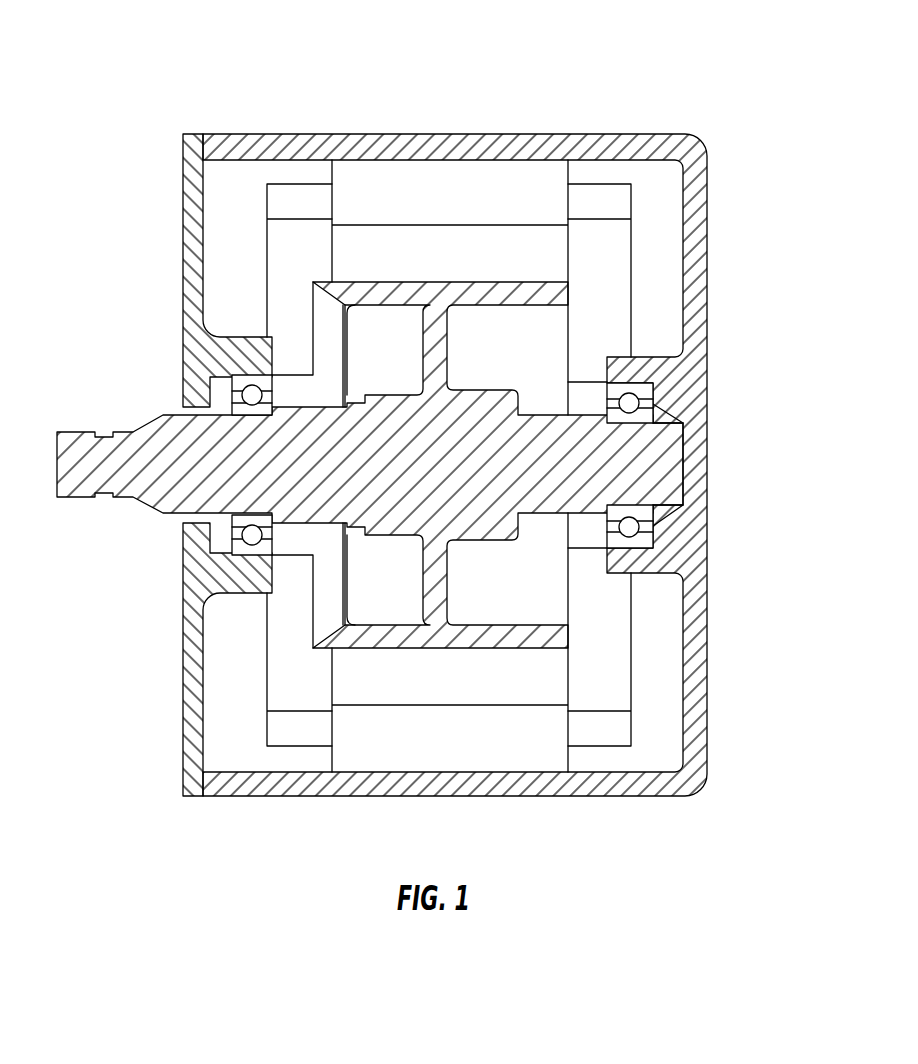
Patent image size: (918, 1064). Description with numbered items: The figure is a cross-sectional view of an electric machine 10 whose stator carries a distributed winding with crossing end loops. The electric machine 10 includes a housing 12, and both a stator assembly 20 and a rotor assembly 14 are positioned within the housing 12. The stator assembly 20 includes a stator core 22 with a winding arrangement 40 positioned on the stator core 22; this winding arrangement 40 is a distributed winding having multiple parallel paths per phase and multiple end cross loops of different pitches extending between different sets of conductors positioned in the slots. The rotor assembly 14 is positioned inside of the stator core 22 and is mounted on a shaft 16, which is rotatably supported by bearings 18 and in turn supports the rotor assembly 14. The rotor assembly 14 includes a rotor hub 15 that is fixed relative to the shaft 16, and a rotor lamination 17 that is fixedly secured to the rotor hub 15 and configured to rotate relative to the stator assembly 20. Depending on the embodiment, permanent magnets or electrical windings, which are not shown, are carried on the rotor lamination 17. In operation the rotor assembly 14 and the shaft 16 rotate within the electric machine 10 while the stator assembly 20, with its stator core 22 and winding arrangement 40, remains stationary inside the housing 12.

The electric machine 10 is at (148, 76).
The housing 12 is at (412, 134).
The rotor assembly 14 is at (455, 266).
The rotor hub 15 is at (560, 293).
The shaft 16 is at (482, 506).
The rotor lamination 17 is at (552, 258).
The bearings 18 is at (242, 393).
The stator assembly 20 is at (455, 200).
The stator core 22 is at (515, 175).
The winding arrangement 40 is at (620, 202).